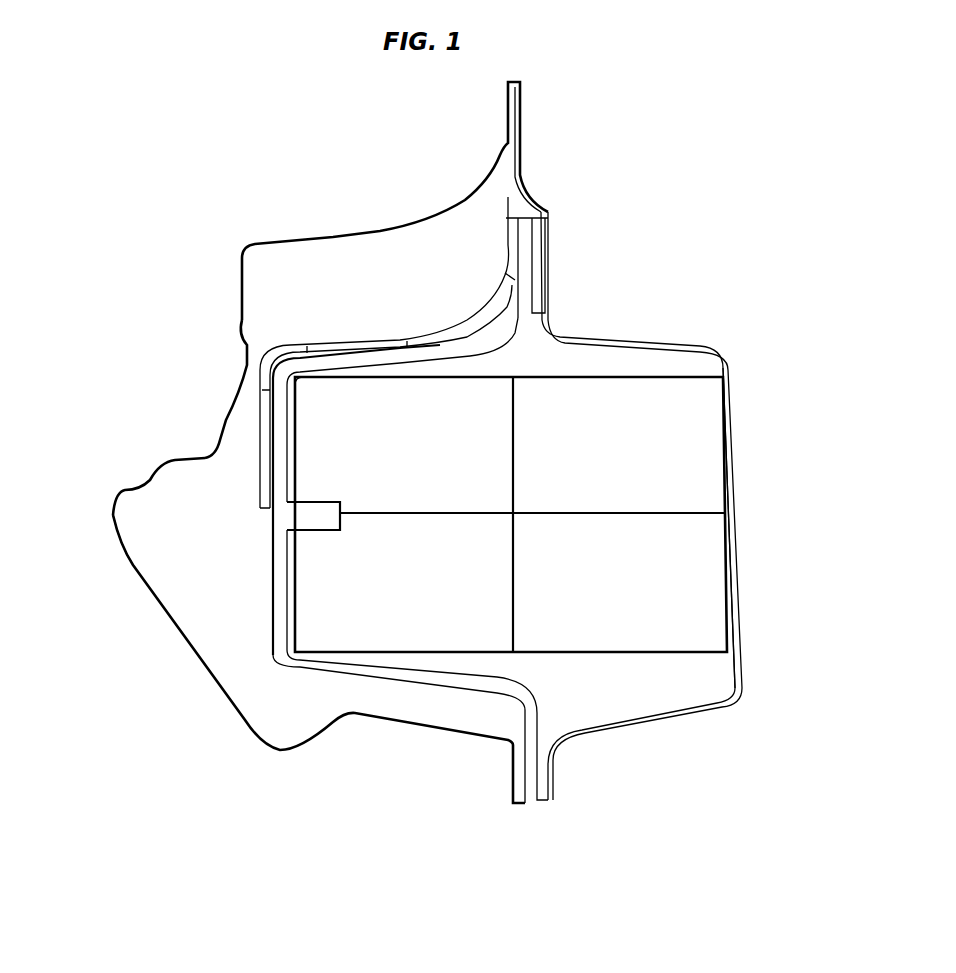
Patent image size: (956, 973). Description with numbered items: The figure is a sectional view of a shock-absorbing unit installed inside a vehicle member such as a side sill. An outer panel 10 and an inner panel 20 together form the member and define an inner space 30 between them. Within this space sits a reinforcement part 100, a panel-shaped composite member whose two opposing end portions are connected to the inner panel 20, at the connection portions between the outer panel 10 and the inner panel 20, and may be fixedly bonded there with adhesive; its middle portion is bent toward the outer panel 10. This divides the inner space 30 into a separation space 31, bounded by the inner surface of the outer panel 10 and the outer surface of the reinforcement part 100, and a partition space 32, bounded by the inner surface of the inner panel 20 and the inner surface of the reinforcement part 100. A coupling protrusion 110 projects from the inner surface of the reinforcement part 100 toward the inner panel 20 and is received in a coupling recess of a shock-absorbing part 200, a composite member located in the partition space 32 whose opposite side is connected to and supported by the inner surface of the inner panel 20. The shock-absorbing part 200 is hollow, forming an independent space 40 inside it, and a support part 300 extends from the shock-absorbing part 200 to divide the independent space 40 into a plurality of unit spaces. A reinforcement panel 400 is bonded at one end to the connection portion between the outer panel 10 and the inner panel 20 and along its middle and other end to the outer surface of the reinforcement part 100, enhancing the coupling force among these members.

The outer panel 10 is at (333, 237).
The inner panel 20 is at (742, 658).
The inner space 30 is at (391, 713).
The separation space 31 is at (188, 502).
The partition space 32 is at (642, 703).
The independent space 40 is at (688, 584).
The reinforcement part 100 is at (280, 612).
The coupling protrusion 110 is at (312, 520).
The shock-absorbing part 200 is at (642, 376).
The support part 300 is at (522, 508).
The reinforcement panel 400 is at (462, 318).